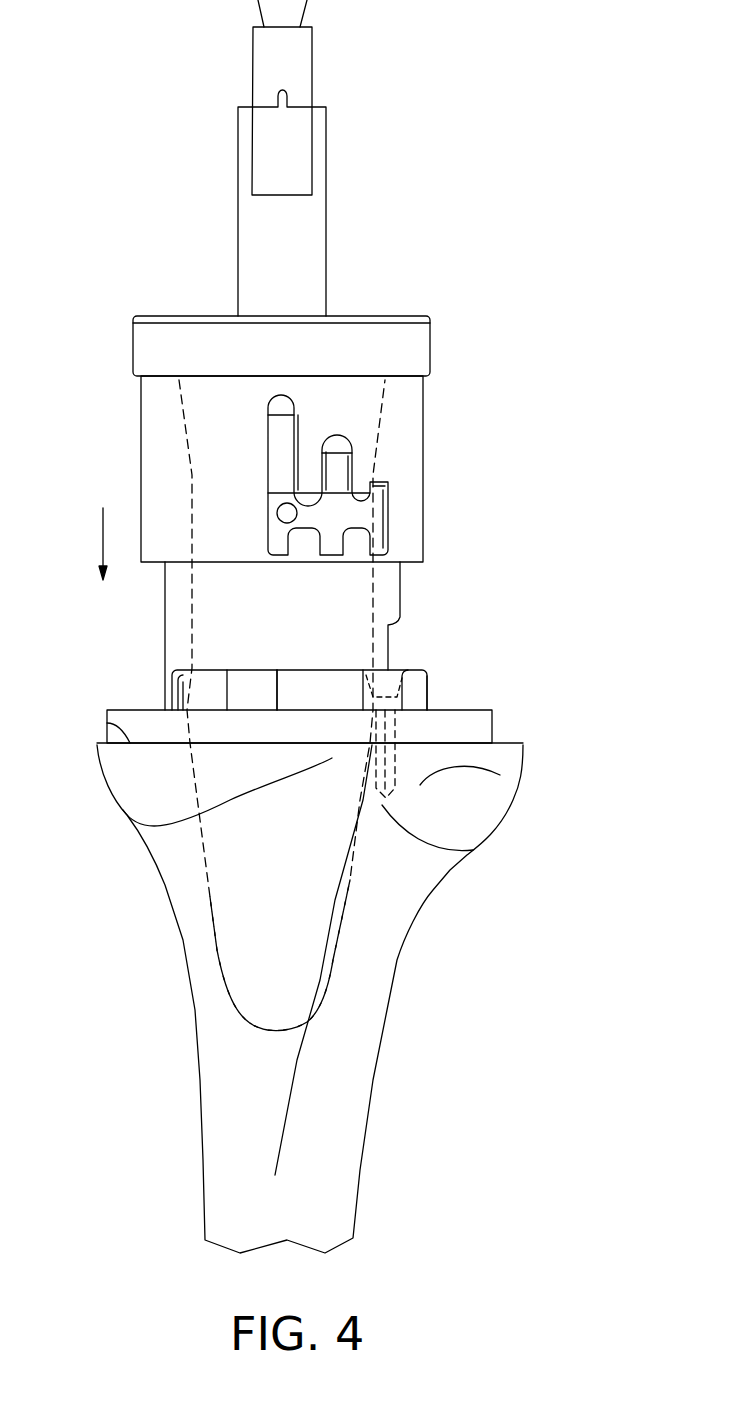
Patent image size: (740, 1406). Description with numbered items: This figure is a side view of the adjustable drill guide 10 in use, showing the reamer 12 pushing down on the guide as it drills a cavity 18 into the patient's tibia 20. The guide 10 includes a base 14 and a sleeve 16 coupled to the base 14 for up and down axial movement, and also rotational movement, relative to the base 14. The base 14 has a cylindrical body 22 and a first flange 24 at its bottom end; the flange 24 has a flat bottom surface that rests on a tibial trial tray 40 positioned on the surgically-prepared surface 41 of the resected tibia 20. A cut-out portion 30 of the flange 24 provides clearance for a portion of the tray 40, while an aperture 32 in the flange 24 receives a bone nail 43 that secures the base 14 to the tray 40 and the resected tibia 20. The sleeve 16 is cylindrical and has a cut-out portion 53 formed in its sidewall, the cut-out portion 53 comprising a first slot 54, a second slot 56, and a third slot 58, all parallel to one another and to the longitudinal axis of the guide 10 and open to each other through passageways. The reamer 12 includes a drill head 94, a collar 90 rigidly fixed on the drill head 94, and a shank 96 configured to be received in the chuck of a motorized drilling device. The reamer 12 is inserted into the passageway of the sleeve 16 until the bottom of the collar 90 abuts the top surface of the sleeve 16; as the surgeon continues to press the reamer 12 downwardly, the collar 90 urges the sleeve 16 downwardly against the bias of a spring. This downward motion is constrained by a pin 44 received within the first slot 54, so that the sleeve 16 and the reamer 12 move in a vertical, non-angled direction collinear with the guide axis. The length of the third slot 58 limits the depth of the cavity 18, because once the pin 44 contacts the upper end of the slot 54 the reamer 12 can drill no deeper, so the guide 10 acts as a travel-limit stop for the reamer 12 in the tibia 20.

The adjustable drill guide 10 is at (495, 447).
The reamer 12 is at (374, 207).
The base 14 is at (352, 632).
The sleeve 16 is at (128, 387).
The cavity 18 is at (222, 948).
The tibia 20 is at (413, 911).
The cylindrical body 22 is at (395, 590).
The first flange 24 is at (427, 693).
The cut-out portion 30 is at (228, 685).
The aperture 32 is at (402, 680).
The tibial trial tray 40 is at (492, 727).
The surgically-prepared surface 41 is at (107, 722).
The bone nail 43 is at (395, 773).
The pin 44 is at (278, 513).
The cut-out portion 53 is at (252, 450).
The first slot 54 is at (340, 442).
The second slot 56 is at (323, 447).
The third slot 58 is at (378, 483).
The collar 90 is at (422, 350).
The drill head 94 is at (178, 628).
The shank 96 is at (312, 70).